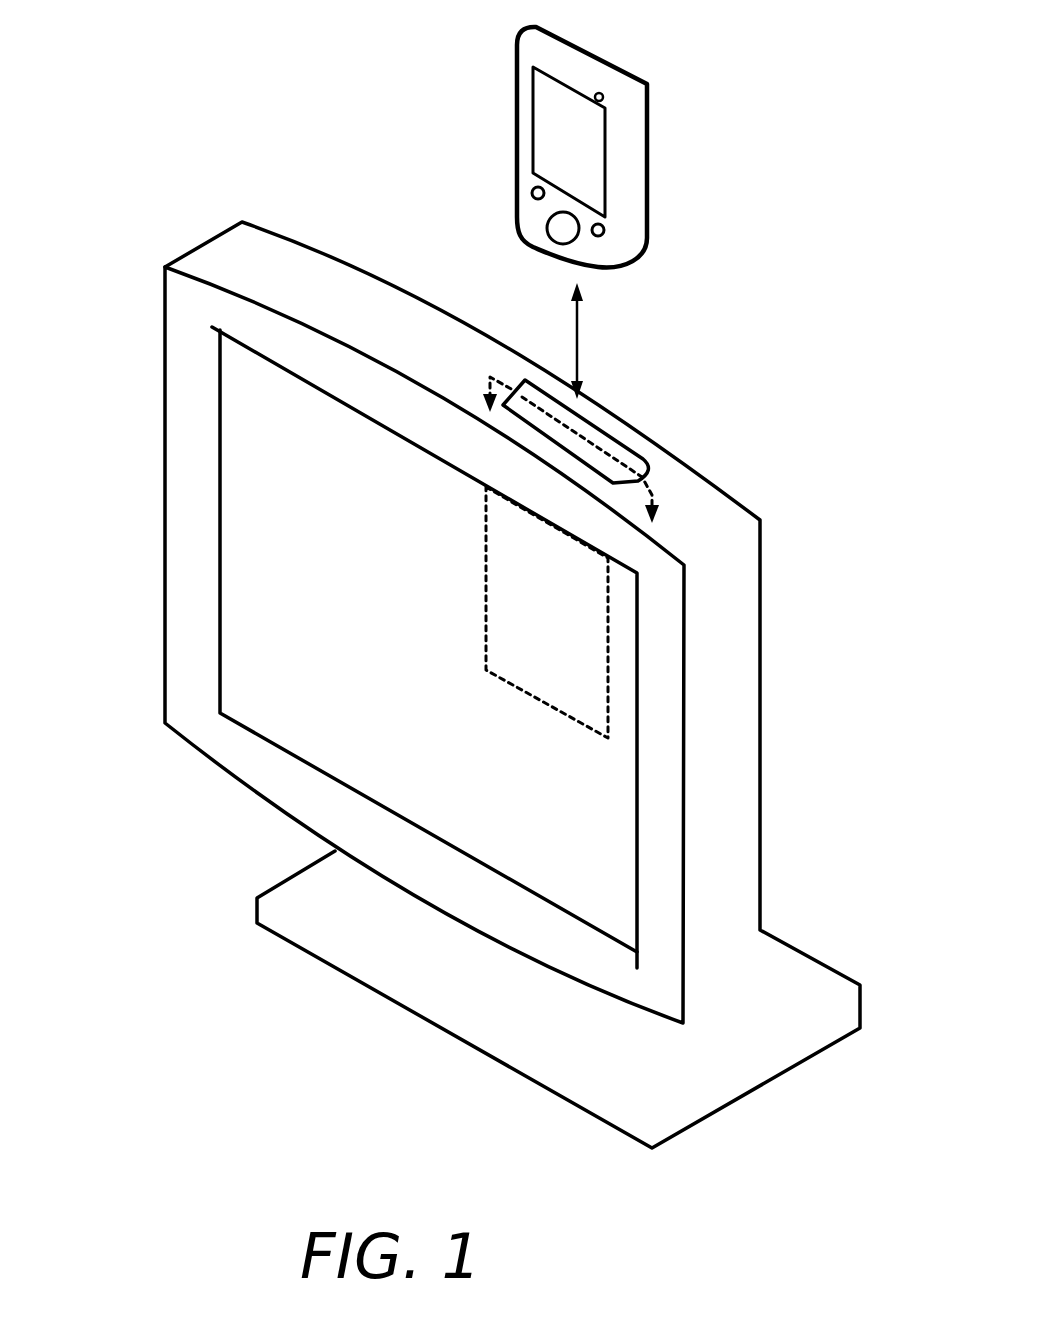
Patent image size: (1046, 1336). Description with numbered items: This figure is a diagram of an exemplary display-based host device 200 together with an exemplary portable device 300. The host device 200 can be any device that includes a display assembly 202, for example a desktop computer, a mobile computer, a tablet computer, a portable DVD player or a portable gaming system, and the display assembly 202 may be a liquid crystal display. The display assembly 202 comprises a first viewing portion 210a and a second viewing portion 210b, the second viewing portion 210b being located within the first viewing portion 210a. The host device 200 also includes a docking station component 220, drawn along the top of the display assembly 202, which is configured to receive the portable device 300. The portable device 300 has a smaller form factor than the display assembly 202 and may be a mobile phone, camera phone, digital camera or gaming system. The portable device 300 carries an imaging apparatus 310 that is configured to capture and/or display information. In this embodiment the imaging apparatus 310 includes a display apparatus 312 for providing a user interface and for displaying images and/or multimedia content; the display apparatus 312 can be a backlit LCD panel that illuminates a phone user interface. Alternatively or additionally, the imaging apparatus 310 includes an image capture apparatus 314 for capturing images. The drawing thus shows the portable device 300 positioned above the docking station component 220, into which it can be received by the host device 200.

The display-based host device 200 is at (210, 237).
The display assembly 202 is at (188, 542).
The first viewing portion 210a is at (349, 580).
The second viewing portion 210b is at (584, 637).
The docking station component 220 is at (610, 428).
The portable device 300 is at (640, 167).
The imaging apparatus 310 is at (527, 135).
The display apparatus 312 is at (588, 178).
The image capture apparatus 314 is at (601, 93).